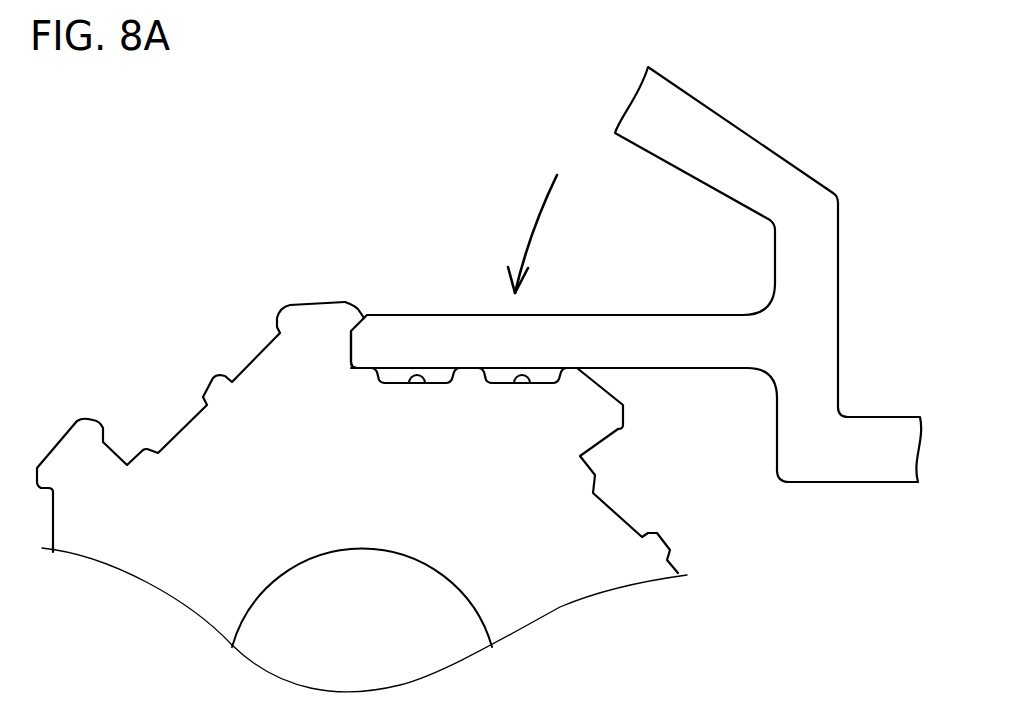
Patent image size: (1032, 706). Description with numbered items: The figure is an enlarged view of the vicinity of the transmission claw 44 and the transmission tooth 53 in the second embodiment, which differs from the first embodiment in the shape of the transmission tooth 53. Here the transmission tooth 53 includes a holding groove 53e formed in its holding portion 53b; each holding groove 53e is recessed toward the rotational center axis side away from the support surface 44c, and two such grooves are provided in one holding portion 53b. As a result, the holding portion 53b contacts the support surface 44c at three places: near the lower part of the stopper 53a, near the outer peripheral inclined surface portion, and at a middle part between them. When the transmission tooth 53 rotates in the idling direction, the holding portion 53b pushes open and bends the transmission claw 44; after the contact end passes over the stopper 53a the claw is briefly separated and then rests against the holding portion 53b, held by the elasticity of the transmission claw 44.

The transmission claw 44 is at (675, 342).
The support surface 44c is at (540, 367).
The transmission tooth 53 is at (592, 412).
The stopper 53a is at (343, 352).
The holding portion 53b is at (365, 371).
The holding groove 53e is at (403, 381).